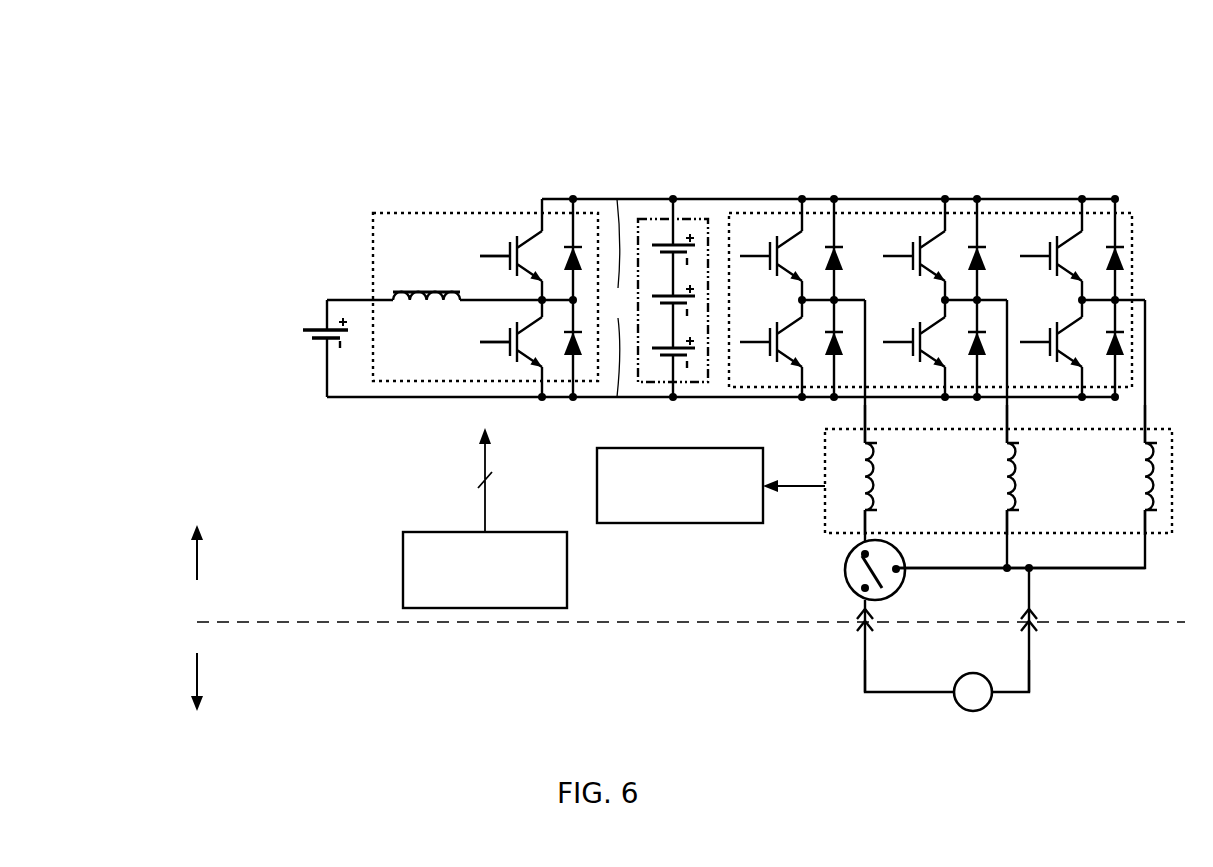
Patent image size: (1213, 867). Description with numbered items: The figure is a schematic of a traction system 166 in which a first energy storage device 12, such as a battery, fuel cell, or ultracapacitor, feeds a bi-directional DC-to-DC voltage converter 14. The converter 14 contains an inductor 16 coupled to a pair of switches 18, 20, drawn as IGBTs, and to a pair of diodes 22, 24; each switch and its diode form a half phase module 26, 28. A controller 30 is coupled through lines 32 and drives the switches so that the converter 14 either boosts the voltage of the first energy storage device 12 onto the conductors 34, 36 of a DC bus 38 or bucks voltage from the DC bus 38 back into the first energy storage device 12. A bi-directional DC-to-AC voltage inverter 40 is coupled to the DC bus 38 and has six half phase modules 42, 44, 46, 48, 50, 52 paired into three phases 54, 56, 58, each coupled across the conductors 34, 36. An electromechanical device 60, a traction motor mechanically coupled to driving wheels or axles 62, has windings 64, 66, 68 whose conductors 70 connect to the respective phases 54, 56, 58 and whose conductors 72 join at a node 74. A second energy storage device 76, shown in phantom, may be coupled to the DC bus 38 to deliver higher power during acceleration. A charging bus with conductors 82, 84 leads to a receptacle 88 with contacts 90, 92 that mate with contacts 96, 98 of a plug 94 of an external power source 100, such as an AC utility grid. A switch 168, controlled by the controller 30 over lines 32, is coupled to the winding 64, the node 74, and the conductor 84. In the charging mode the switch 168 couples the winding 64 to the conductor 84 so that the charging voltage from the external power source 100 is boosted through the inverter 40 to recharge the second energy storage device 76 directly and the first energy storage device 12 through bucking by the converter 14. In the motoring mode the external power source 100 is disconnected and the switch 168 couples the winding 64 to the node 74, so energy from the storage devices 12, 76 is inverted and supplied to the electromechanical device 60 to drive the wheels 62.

The first energy storage device 12 is at (322, 340).
The bi-directional DC-to-DC voltage converter 14 is at (413, 213).
The inductor 16 is at (423, 292).
The switch 18 is at (490, 256).
The switch 20 is at (490, 342).
The diode 22 is at (578, 248).
The diode 24 is at (578, 352).
The half phase module 26 is at (531, 226).
The half phase module 28 is at (470, 346).
The controller 30 is at (403, 568).
The lines 32 is at (485, 500).
The conductor 34 is at (617, 199).
The conductor 36 is at (617, 397).
The DC bus 38 is at (614, 298).
The bi-directional DC-to-AC voltage inverter 40 is at (746, 213).
The half phase module 42 is at (789, 218).
The half phase module 44 is at (781, 310).
The half phase module 46 is at (931, 213).
The half phase module 48 is at (926, 311).
The half phase module 50 is at (1071, 213).
The half phase module 52 is at (1065, 311).
The phase 54 is at (803, 274).
The phase 56 is at (945, 274).
The phase 58 is at (1082, 273).
The electromechanical device 60 is at (825, 456).
The driving wheels or axles 62 is at (597, 492).
The winding 64 is at (878, 487).
The winding 66 is at (1019, 487).
The winding 68 is at (1149, 461).
The conductors 70 is at (866, 409).
The conductors 72 is at (866, 527).
The node 74 is at (991, 570).
The second energy storage device 76 is at (690, 383).
The conductor 82 is at (1030, 677).
The conductor 84 is at (864, 678).
The receptacle 88 is at (915, 593).
The contact 90 is at (872, 617).
The contact 92 is at (1036, 616).
The plug 94 is at (919, 646).
The contact 96 is at (860, 630).
The contact 98 is at (1034, 628).
The external power source 100 is at (972, 712).
The traction system 166 is at (694, 90).
The switch 168 is at (848, 558).